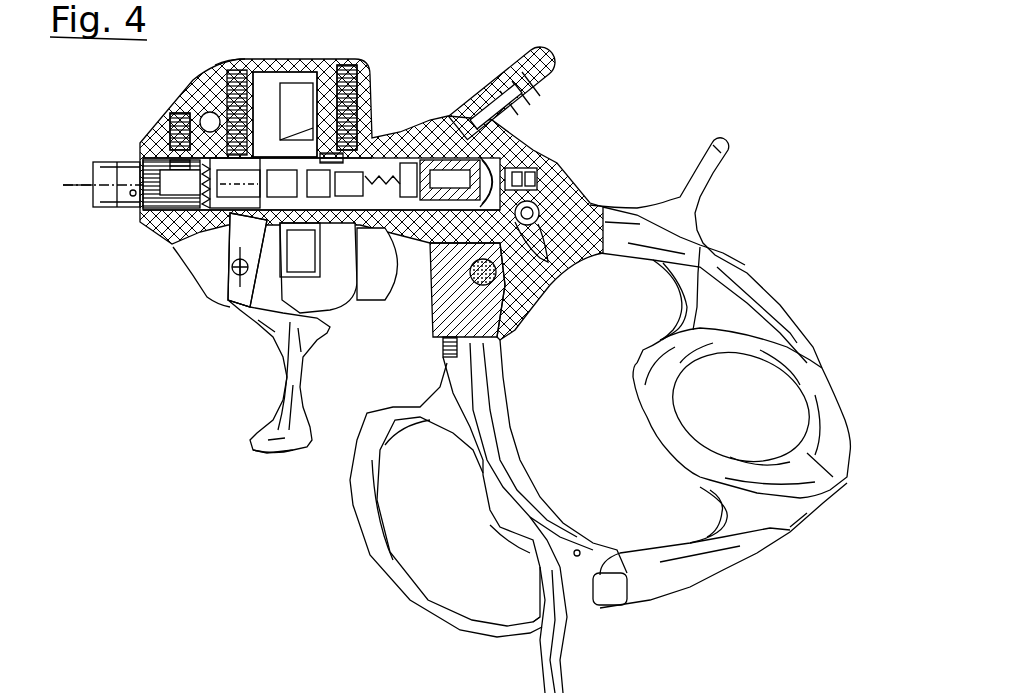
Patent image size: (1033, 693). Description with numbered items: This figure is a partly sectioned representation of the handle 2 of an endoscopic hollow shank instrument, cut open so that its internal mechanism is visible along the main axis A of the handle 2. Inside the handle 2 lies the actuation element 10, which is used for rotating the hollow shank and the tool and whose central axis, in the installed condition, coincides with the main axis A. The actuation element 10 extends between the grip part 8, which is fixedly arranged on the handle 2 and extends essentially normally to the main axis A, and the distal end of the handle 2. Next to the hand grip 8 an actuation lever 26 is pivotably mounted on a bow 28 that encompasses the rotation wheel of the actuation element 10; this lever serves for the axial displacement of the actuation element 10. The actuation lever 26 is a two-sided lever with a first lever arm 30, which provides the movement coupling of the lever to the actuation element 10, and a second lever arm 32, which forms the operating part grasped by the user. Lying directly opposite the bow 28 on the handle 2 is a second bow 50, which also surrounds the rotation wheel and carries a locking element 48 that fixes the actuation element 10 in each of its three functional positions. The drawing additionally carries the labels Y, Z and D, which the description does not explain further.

The handle 2 is at (608, 168).
The grip part 8 is at (380, 548).
The actuation element 10 is at (273, 113).
The actuation lever 26 is at (248, 456).
The bow 28 is at (187, 258).
The first lever arm 30 is at (230, 277).
The second lever arm 32 is at (280, 343).
The locking element 48 is at (190, 92).
The bow 50 is at (320, 60).
The main axis A is at (67, 186).
The pivot lever Y is at (510, 183).
The housing top portion Z is at (227, 63).
The dimension D is at (253, 283).